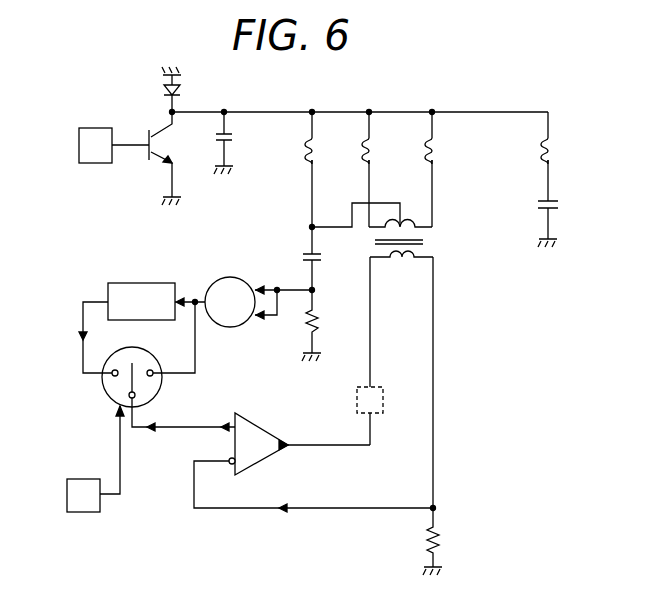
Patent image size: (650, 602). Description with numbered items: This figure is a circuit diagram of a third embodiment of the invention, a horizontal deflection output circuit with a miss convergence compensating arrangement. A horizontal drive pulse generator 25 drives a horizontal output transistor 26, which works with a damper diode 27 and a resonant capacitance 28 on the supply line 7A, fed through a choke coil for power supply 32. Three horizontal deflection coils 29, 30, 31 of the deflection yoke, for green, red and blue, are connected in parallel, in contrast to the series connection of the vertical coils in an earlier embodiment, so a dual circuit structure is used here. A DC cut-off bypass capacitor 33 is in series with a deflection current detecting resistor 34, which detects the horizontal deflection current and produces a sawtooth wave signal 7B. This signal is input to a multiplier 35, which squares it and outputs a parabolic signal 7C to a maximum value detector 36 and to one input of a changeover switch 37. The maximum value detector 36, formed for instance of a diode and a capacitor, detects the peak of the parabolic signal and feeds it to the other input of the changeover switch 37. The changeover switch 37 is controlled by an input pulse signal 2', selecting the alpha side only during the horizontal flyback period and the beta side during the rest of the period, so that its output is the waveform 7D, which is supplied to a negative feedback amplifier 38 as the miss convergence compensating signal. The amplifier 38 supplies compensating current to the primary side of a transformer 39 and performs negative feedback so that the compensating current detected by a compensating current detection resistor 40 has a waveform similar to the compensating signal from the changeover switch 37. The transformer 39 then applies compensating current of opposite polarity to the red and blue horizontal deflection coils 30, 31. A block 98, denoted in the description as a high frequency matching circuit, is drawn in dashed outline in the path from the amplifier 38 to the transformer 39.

The power supply bus line 7A is at (262, 112).
The sawtooth wave signal 7B is at (287, 290).
The parabolic signal 7C is at (195, 348).
The changeover switch output signal 7D is at (185, 427).
The input pulse signal 2' is at (78, 459).
The horizontal drive pulse generator 25 is at (79, 145).
The horizontal output transistor 26 is at (165, 144).
The damper diode 27 is at (165, 90).
The resonant capacitance 28 is at (234, 137).
The horizontal deflection coil for green 29 is at (319, 151).
The horizontal deflection coil for red 30 is at (379, 151).
The horizontal deflection coil for blue 31 is at (442, 151).
The choke coil for power supply 32 is at (558, 149).
The DC cut-off bypass capacitor 33 is at (323, 257).
The deflection current detecting resistor 34 is at (318, 323).
The multiplier 35 is at (230, 277).
The maximum value detector 36 is at (142, 283).
The changeover switch 37 is at (104, 388).
The negative feedback amplifier 38 is at (270, 457).
The transformer 39 is at (401, 264).
The compensating current detection resistor 40 is at (438, 540).
The high frequency matching circuit 98 is at (356, 406).